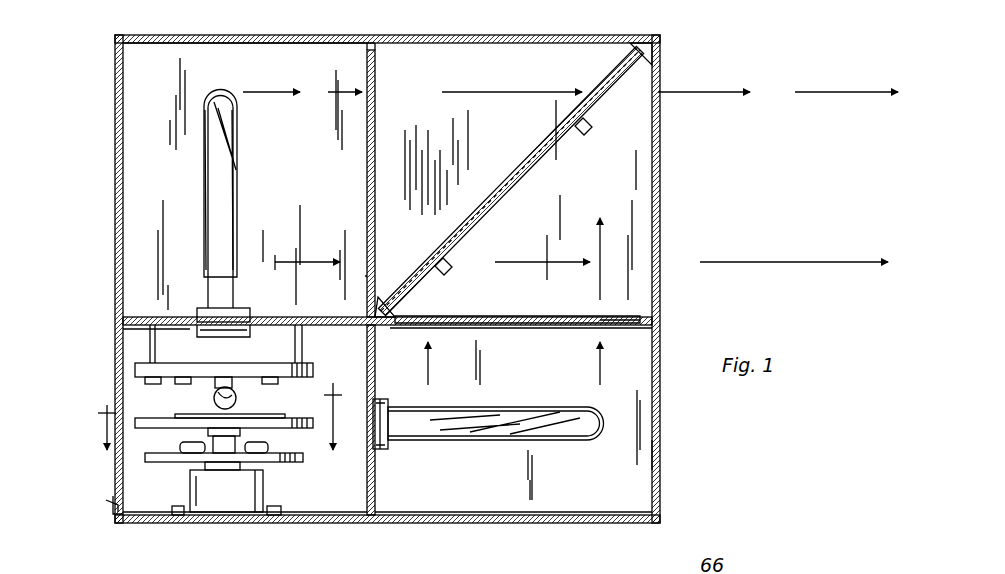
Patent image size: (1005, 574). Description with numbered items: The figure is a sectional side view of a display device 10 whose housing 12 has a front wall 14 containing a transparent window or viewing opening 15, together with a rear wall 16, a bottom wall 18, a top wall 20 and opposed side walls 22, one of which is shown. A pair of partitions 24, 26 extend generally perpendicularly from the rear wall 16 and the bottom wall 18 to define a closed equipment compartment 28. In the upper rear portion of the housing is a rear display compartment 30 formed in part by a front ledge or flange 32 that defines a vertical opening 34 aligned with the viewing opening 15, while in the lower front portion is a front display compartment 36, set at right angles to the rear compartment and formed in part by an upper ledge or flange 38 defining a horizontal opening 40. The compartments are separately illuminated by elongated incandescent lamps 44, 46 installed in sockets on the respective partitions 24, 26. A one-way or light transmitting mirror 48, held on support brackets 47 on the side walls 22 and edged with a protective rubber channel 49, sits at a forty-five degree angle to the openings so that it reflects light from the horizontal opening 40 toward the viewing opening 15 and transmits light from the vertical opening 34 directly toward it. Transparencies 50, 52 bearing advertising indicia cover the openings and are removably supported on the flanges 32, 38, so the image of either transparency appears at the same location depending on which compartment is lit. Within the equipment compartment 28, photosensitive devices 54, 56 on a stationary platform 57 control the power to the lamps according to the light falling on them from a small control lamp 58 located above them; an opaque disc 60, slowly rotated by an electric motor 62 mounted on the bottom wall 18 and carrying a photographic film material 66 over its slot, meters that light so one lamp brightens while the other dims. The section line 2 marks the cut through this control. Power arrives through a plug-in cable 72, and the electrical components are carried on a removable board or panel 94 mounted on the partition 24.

The display device 10 is at (684, 14).
The housing 12 is at (392, 36).
The front wall 14 is at (660, 80).
The viewing opening 15 is at (660, 268).
The rear wall 16 is at (116, 156).
The bottom wall 18 is at (463, 516).
The top wall 20 is at (482, 36).
The side walls 22 is at (541, 500).
The partition 24 is at (125, 331).
The partition 26 is at (376, 491).
The equipment compartment 28 is at (340, 512).
The rear display compartment 30 is at (274, 62).
The front ledge or flange 32 is at (366, 52).
The vertical opening 34 is at (366, 282).
The front display compartment 36 is at (660, 466).
The upper ledge or flange 38 is at (661, 333).
The horizontal opening 40 is at (610, 330).
The incandescent lamp 44 is at (218, 160).
The incandescent lamp 46 is at (523, 407).
The support brackets 47 is at (594, 128).
The one-way mirror 48 is at (533, 152).
The rubber channel 49 is at (658, 62).
The transparency 50 is at (376, 106).
The transparency 52 is at (544, 316).
The photosensitive device 54 is at (196, 456).
The photosensitive device 56 is at (268, 456).
The stationary platform 57 is at (190, 452).
The control lamp 58 is at (214, 402).
The disc 60 is at (166, 427).
The electric motor 62 is at (244, 491).
The material 66 is at (255, 420).
The plug-in cable 72 is at (118, 508).
The board or panel 94 is at (135, 370).
The section line 2- 2 is at (210, 416).